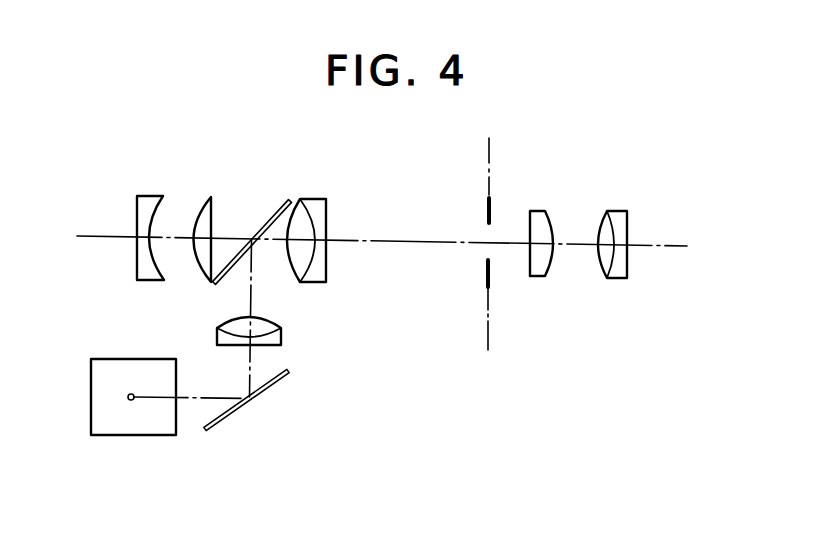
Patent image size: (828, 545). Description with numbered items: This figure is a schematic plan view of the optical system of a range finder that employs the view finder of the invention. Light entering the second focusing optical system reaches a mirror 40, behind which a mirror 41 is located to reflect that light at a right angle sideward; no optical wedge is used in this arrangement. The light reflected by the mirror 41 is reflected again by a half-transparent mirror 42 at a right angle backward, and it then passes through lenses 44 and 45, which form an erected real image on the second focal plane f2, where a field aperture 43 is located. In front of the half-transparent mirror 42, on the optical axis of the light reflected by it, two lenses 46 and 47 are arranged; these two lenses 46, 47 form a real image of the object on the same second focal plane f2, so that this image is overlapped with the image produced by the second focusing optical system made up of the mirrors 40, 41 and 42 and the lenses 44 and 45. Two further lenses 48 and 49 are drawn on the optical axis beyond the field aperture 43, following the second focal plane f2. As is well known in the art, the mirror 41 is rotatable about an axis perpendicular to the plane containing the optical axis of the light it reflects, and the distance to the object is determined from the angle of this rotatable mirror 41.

The mirror 40 is at (142, 435).
The mirror 41 is at (242, 408).
The half-transparent mirror 42 is at (268, 223).
The field aperture 43 is at (488, 275).
The lens 44 is at (281, 334).
The lens 45 is at (318, 210).
The lens 46 is at (142, 207).
The lens 47 is at (205, 213).
The lens 48 is at (545, 220).
The lens 49 is at (617, 218).
The second focal plane f2 is at (488, 328).